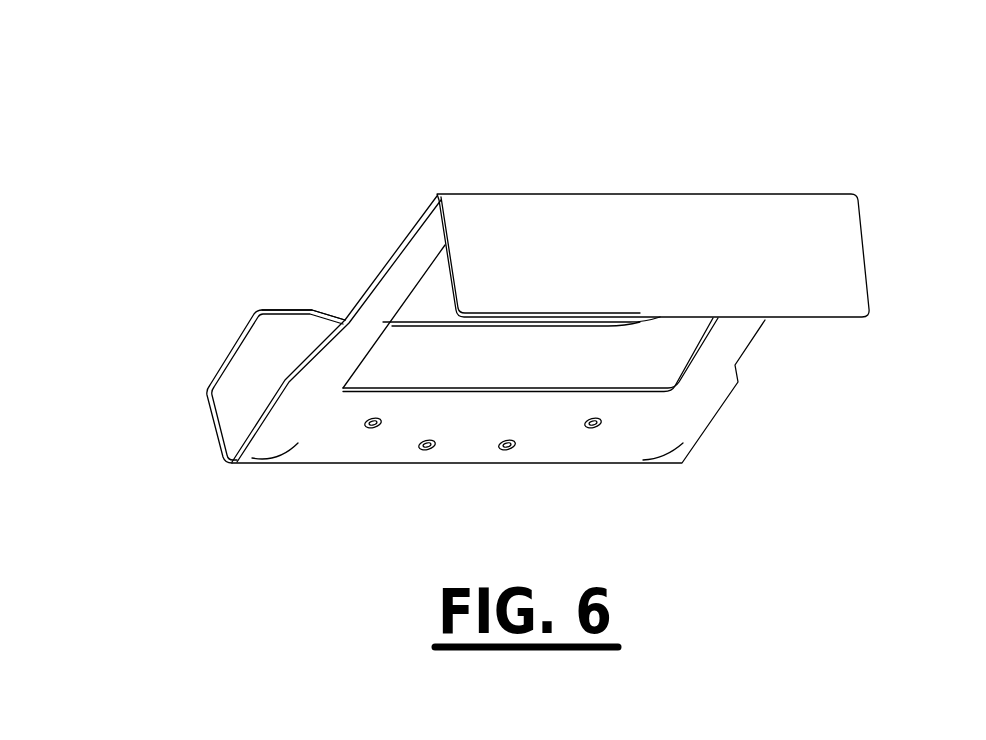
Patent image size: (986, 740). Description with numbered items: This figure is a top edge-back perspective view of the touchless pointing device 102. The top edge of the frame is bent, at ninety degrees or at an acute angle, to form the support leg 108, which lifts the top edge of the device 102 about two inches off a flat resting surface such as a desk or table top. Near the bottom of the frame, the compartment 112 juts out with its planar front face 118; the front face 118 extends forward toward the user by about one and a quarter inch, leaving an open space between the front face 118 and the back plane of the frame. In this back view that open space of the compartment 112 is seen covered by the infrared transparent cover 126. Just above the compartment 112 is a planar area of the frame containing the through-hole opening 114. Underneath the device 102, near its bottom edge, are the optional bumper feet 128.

The touchless pointing device 102 is at (838, 110).
The support leg 108 is at (842, 262).
The compartment 112 is at (221, 346).
The through-hole opening 114 is at (420, 305).
The planar front face 118 is at (276, 308).
The infrared transparent cover 126 is at (270, 345).
The bumper feet 128 is at (273, 455).